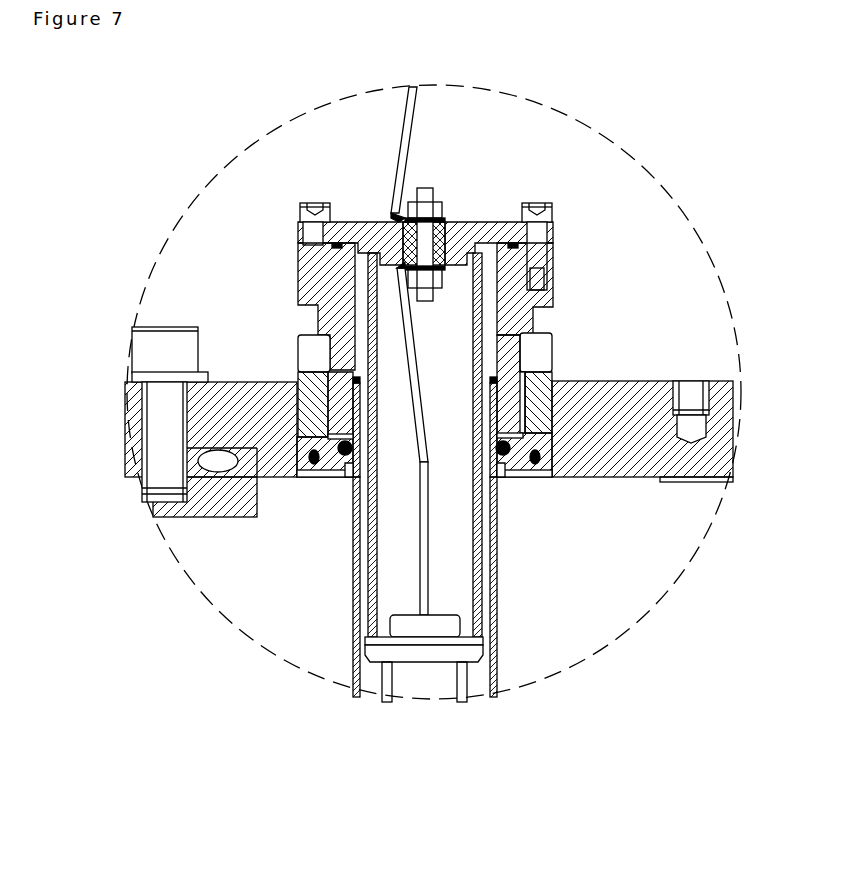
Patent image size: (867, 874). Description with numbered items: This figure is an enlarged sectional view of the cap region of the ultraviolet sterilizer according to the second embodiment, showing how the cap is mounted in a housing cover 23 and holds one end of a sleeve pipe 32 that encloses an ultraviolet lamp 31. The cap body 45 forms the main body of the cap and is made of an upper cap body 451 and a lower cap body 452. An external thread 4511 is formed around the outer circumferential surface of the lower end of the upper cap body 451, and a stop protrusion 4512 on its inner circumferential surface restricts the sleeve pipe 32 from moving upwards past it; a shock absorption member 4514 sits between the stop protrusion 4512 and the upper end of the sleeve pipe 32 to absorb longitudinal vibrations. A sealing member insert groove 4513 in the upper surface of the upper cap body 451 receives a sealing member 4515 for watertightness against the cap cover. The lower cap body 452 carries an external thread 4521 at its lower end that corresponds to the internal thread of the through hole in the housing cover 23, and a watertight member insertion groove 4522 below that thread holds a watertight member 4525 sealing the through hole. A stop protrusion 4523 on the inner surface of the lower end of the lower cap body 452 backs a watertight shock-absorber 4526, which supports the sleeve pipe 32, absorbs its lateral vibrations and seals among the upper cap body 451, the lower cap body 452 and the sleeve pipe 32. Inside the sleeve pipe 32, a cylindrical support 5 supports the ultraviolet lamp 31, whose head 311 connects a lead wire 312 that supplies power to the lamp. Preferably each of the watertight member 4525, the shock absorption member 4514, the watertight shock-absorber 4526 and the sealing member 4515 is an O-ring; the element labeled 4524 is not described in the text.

The housing cover 23 is at (133, 403).
The cap body 45 is at (287, 352).
The upper cap body 451 is at (510, 307).
The external thread 4511 is at (523, 420).
The stop protrusion 4512 is at (497, 368).
The sealing member insert groove 4513 is at (547, 310).
The shock absorption member 4514 is at (497, 381).
The sealing member 4515 is at (513, 243).
The lower cap body 452 is at (317, 413).
The external thread 4521 is at (545, 418).
The watertight member insertion groove 4522 is at (540, 473).
The stop protrusion 4523 is at (520, 470).
The inner sleeve 4524 is at (548, 417).
The watertight member 4525 is at (540, 460).
The watertight shock-absorber 4526 is at (500, 470).
The support 5 is at (480, 612).
The ultraviolet lamp 31 is at (377, 715).
The head 311 is at (430, 653).
The lead wire 312 is at (420, 578).
The sleeve pipe 32 is at (357, 663).